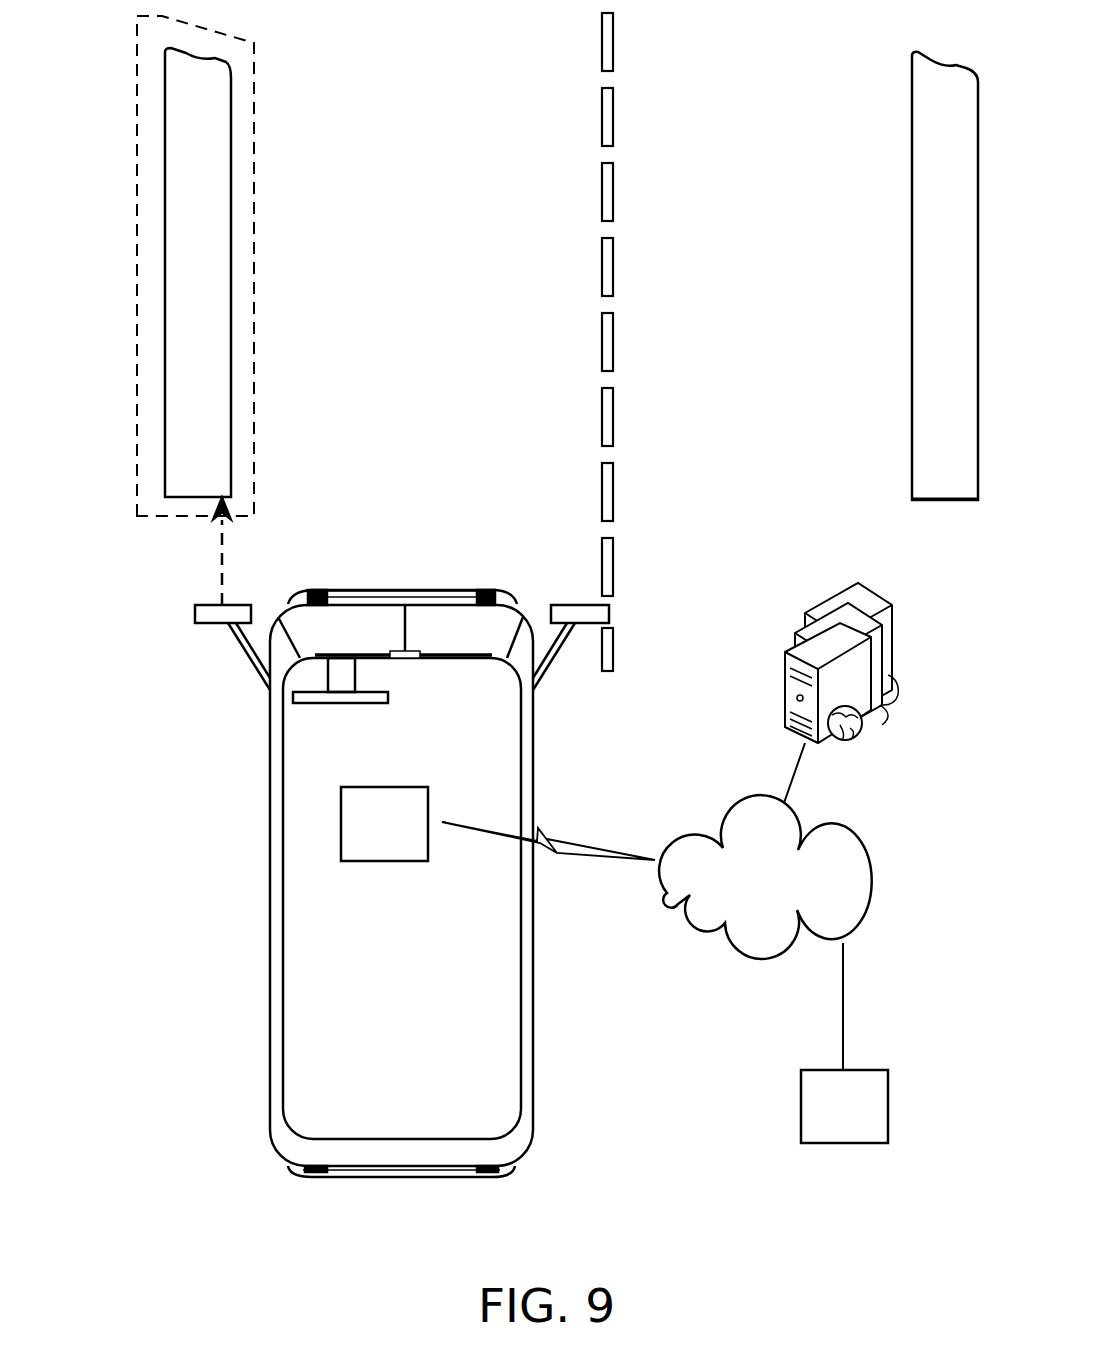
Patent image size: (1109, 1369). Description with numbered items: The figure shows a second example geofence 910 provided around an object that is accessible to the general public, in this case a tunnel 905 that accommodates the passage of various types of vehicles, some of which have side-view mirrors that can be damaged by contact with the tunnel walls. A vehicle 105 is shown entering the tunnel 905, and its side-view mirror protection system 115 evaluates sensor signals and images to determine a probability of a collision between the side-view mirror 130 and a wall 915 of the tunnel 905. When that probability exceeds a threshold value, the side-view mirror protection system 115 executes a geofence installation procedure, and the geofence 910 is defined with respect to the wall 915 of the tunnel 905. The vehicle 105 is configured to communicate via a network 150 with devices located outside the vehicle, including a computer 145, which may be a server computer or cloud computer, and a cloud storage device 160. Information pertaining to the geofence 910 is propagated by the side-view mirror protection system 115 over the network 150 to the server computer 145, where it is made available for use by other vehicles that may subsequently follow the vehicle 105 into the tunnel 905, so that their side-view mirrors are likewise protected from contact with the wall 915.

The vehicle 105 is at (222, 846).
The side-view mirror protection system 115 is at (405, 836).
The side-view mirror 130 is at (203, 625).
The computer 145 is at (750, 696).
The network 150 is at (852, 894).
The cloud storage device 160 is at (865, 1118).
The tunnel 905 is at (535, 269).
The geofence 910 is at (137, 278).
The wall 915 is at (217, 247).